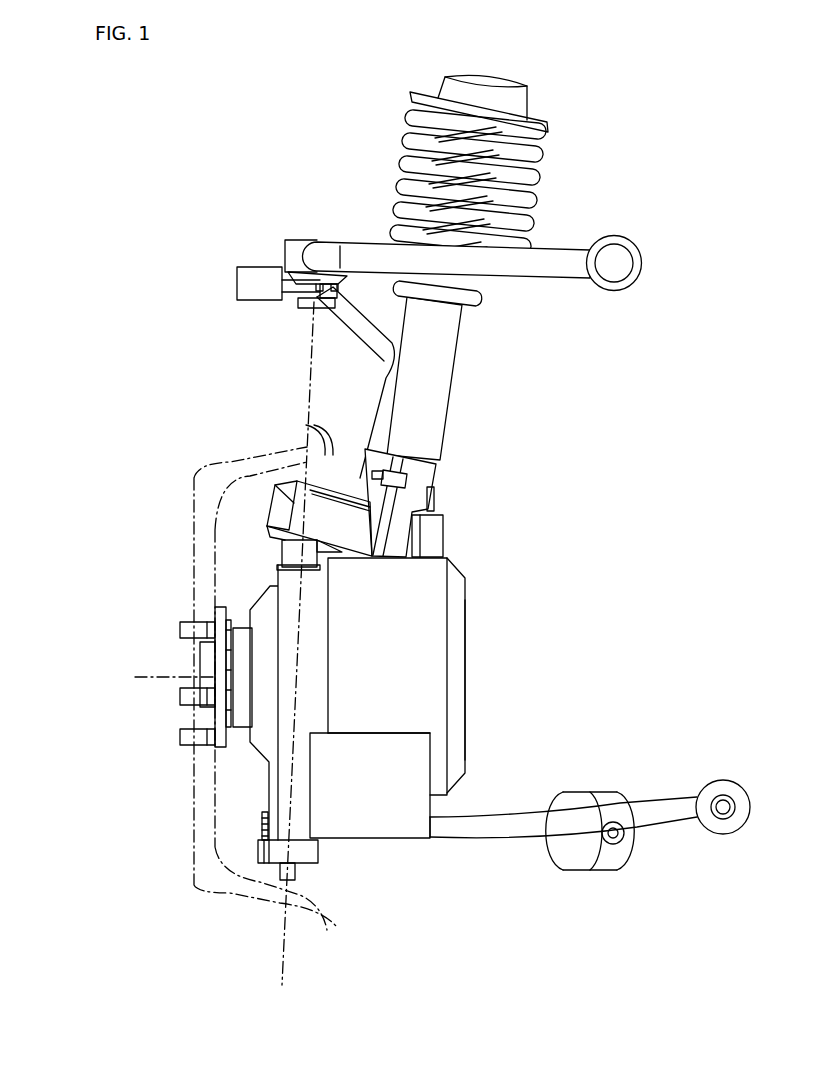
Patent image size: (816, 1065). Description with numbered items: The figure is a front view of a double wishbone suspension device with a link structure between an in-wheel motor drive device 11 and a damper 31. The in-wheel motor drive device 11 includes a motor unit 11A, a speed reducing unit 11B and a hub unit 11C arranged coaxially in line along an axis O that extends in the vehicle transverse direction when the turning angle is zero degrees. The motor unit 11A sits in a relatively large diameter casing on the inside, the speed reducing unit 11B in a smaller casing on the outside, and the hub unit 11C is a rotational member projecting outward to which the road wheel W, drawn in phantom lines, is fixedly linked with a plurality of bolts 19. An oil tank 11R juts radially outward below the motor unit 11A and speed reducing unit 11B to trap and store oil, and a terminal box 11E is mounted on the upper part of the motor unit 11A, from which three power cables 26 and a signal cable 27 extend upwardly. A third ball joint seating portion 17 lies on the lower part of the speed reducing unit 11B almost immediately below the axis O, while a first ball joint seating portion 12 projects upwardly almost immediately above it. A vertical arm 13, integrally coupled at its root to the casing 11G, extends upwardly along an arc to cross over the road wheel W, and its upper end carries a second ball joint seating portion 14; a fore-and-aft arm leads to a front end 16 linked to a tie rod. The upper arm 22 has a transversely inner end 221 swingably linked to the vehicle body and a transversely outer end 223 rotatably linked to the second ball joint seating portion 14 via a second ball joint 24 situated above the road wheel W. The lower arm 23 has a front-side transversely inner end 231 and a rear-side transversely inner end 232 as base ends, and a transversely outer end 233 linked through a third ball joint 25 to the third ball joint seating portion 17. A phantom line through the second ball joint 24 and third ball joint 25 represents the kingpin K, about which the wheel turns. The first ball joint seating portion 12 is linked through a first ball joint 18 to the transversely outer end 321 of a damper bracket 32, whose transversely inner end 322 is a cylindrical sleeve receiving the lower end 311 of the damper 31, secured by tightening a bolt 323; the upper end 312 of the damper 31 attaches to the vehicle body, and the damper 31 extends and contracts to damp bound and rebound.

The upper end 312 is at (513, 94).
The damper 31 is at (527, 187).
The upper arm 22 is at (390, 262).
The transversely outer end 223 is at (350, 256).
The second ball joint 24 is at (298, 244).
The transversely inner end 221 is at (643, 254).
The front end 16 is at (237, 279).
The second ball joint seating portion 14 is at (320, 304).
The lower end 311 is at (425, 402).
The bolt 323 is at (308, 440).
The vertical arm 13 is at (385, 352).
The damper bracket 32 is at (300, 490).
The transversely outer end 321 is at (280, 500).
The transversely inner end 322 is at (418, 472).
The power cables 26 is at (433, 480).
The signal cable 27 is at (434, 507).
The road wheel W is at (194, 527).
The first ball joint 18 is at (283, 534).
The first ball joint seating portion 12 is at (288, 553).
The terminal box 11E is at (443, 539).
The casing 11G is at (262, 610).
The bolts 19 is at (180, 630).
The in-wheel motor drive device 11 is at (467, 647).
The axis O is at (162, 675).
The motor unit 11A is at (465, 730).
The hub unit 11C is at (218, 742).
The speed reducing unit 11B is at (265, 740).
The rear-side transversely inner end 232 is at (725, 793).
The third ball joint 25 is at (262, 822).
The oil tank 11R is at (378, 827).
The transversely outer end 233 is at (447, 830).
The lower arm 23 is at (538, 828).
The front-side transversely inner end 231 is at (613, 857).
The third ball joint seating portion 17 is at (288, 810).
The kingpin K is at (295, 654).